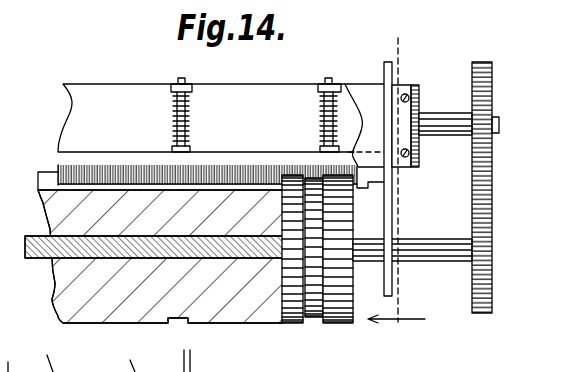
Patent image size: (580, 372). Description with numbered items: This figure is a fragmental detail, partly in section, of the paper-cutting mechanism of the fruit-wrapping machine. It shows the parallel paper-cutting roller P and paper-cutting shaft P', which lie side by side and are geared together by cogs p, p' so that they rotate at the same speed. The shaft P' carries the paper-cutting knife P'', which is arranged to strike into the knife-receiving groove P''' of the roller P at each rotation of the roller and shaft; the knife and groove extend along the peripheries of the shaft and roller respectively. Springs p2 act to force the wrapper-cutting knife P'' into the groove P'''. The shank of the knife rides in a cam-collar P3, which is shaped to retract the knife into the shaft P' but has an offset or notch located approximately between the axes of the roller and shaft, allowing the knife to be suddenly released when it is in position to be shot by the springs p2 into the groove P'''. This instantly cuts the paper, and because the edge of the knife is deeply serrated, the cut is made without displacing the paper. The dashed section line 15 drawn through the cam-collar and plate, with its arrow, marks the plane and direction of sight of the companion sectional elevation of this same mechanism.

The paper-cutting roller P is at (156, 256).
The paper-cutting shaft P' is at (232, 125).
The paper-cutting knife P'' is at (221, 152).
The knife-receiving groove P''' is at (40, 165).
The springs p2 is at (189, 131).
The cam-collar P3 is at (387, 209).
The cog p is at (412, 237).
The cog p' is at (459, 185).
The section line 15- 15 is at (396, 183).